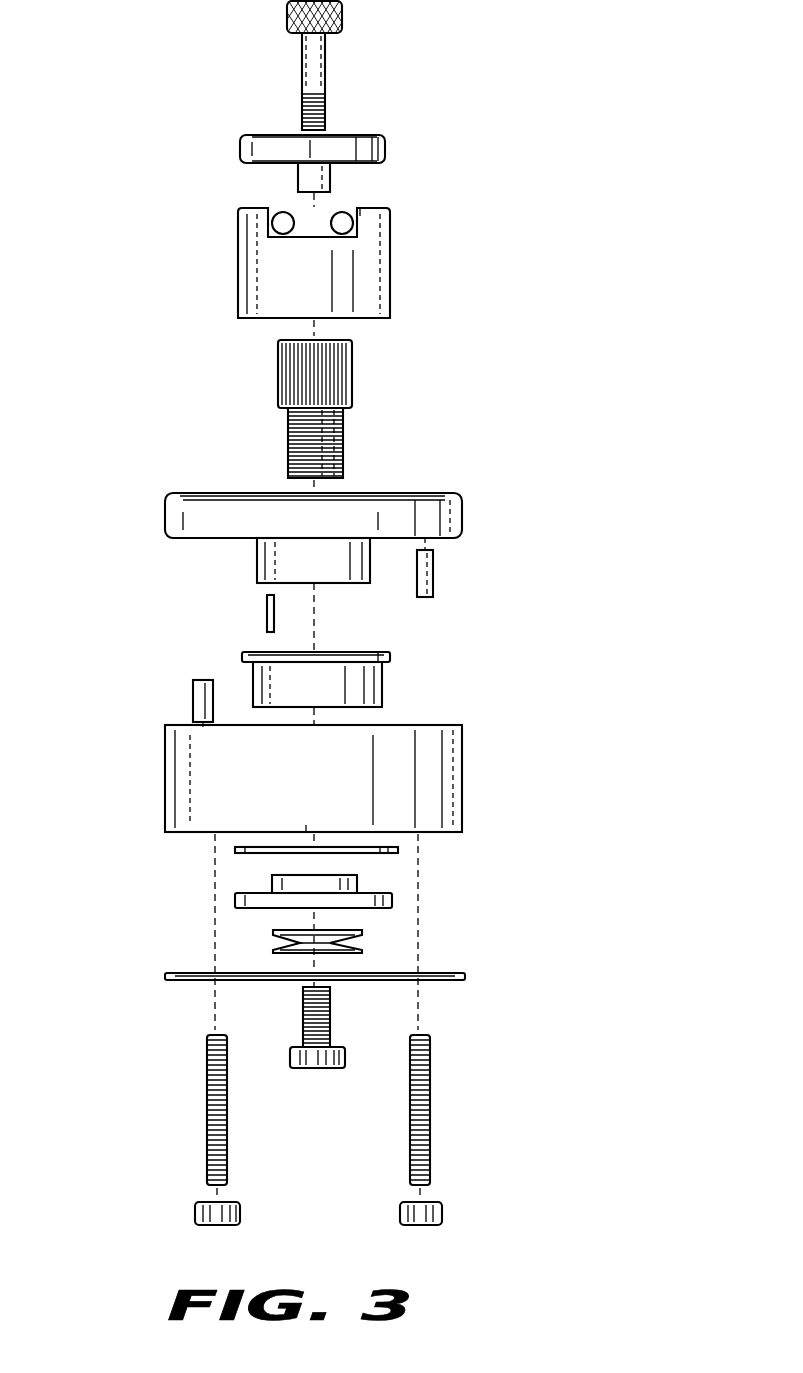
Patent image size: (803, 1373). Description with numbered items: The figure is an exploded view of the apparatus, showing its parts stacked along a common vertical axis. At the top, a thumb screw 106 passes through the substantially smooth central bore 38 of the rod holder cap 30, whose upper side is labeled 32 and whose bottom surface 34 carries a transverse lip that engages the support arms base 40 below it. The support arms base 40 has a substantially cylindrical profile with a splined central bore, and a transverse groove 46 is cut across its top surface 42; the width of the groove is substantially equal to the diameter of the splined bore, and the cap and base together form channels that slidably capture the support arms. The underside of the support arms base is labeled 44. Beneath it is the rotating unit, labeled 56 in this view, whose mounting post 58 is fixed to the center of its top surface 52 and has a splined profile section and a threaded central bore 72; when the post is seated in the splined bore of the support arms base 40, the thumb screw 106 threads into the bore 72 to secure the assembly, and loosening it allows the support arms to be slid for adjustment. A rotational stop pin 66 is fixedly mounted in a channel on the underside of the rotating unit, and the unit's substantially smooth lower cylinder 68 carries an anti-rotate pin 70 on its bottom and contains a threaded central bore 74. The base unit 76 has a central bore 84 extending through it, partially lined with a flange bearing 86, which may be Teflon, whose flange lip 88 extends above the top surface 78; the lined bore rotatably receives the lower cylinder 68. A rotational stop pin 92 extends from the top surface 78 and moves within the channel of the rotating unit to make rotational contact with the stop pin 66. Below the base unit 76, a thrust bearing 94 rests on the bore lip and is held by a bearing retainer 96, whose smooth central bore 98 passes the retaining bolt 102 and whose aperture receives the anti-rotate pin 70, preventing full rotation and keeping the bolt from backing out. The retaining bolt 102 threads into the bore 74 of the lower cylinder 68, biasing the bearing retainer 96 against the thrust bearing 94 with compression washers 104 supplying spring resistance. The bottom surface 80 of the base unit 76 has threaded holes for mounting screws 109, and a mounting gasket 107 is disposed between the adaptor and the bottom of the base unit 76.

The thumb screw 106 is at (345, 15).
The upper surface of cap 32 is at (360, 135).
The rod holder cap 30 is at (387, 152).
The bottom surface of rod holder cap 34 is at (380, 165).
The central bore of rod holder cap 38 is at (290, 131).
The transverse groove 46 is at (306, 236).
The top surface of support arms base 42 is at (378, 208).
The support arms base 40 is at (226, 268).
The bottom of bearing block 44 is at (378, 318).
The threaded central bore of mounting post 72 is at (287, 328).
The mounting post 58 is at (279, 376).
The top surface of rotating unit 52 is at (390, 492).
The base plate 56 is at (167, 522).
The lower cylinder 68 is at (260, 562).
The threaded central bore of lower cylinder 74 is at (335, 594).
The rotational stop pin 66 is at (436, 572).
The anti-rotate pin 70 is at (267, 615).
The flange lip 88 is at (392, 658).
The flange bearing 86 is at (383, 690).
The rotational stop pin 92 is at (193, 700).
The top surface of base unit 78 is at (442, 726).
The base unit 76 is at (177, 798).
The bottom surface of base unit 80 is at (455, 832).
The central bore of base unit 84 is at (300, 836).
The thrust bearing 94 is at (398, 851).
The central bore of bearing retainer 98 is at (298, 874).
The bearing retainer 96 is at (393, 901).
The compression washers 104 is at (273, 938).
The mounting gasket 107 is at (165, 976).
The retaining bolt 102 is at (330, 1070).
The mounting screws 109 is at (207, 1144).